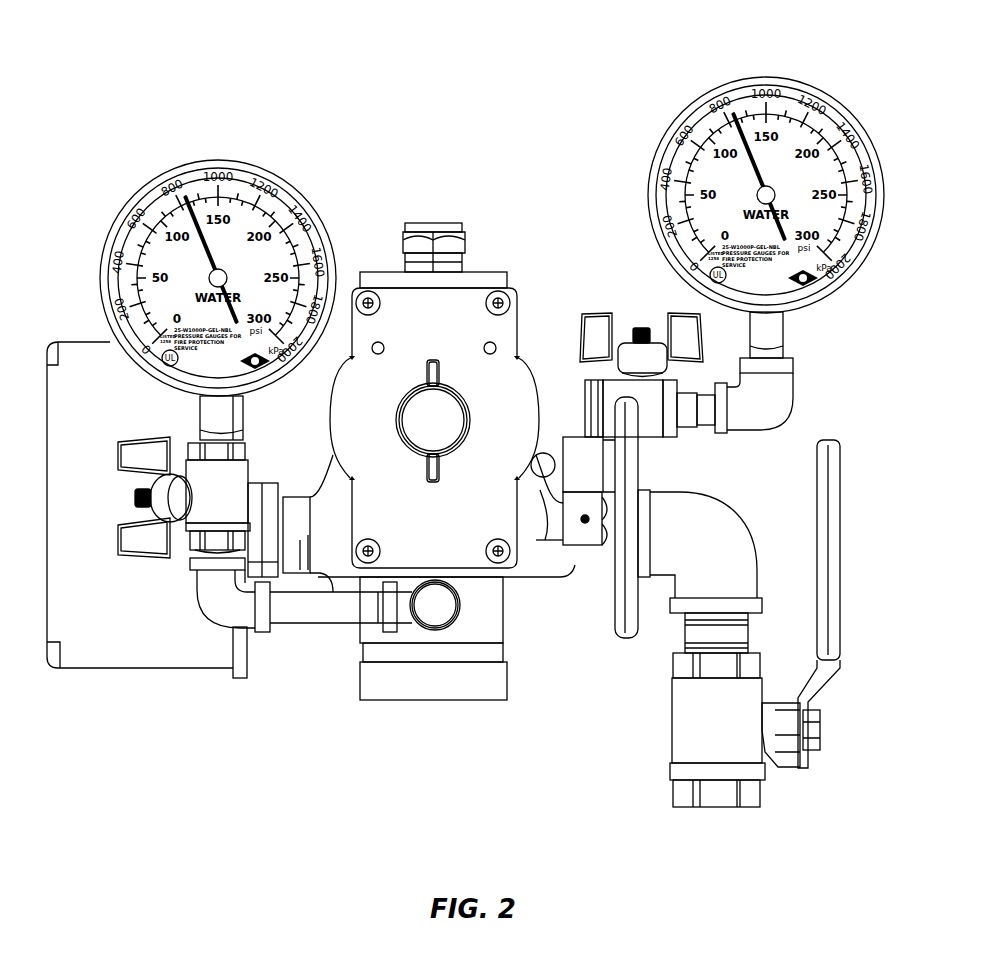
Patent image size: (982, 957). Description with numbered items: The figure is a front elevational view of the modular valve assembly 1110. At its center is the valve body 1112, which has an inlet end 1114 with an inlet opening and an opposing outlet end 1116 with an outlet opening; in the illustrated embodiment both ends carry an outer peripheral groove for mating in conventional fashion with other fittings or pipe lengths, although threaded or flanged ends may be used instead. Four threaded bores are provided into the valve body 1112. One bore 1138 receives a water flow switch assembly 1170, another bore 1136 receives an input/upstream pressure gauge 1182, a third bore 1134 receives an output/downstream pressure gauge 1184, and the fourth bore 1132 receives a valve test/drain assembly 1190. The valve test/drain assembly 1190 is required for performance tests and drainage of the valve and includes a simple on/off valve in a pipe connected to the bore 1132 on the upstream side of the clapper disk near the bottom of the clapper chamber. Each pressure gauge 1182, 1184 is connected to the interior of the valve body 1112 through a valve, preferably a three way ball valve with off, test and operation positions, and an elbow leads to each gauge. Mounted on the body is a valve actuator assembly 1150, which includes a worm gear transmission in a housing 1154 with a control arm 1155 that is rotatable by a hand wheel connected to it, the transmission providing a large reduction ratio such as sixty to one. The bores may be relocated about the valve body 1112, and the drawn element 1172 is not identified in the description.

The valve assembly 1110 is at (347, 52).
The valve body 1112 is at (487, 613).
The inlet end 1114 is at (386, 685).
The outlet end 1116 is at (374, 272).
The fourth bore 1132 is at (580, 565).
The third bore 1134 is at (562, 395).
The bore 1136 is at (443, 608).
The bore 1138 is at (298, 535).
The valve actuator assembly 1150 is at (466, 306).
The housing 1154 is at (482, 318).
The control arm 1155 is at (543, 523).
The water flow switch assembly 1170 is at (113, 672).
The inlet pipe with shutoff valve 1172 is at (148, 640).
The input/upstream pressure gauge 1182 is at (190, 165).
The output/downstream pressure gauge 1184 is at (787, 80).
The valve test/drain assembly 1190 is at (717, 806).